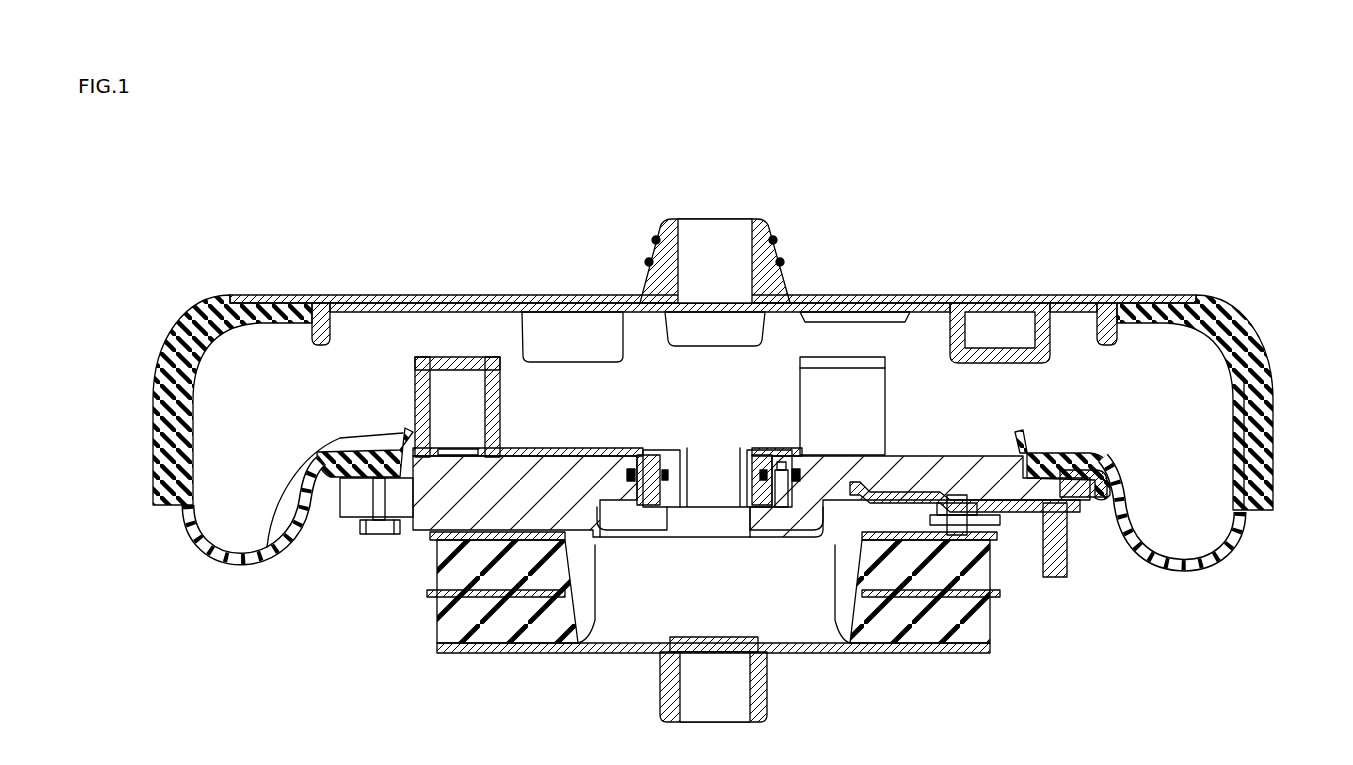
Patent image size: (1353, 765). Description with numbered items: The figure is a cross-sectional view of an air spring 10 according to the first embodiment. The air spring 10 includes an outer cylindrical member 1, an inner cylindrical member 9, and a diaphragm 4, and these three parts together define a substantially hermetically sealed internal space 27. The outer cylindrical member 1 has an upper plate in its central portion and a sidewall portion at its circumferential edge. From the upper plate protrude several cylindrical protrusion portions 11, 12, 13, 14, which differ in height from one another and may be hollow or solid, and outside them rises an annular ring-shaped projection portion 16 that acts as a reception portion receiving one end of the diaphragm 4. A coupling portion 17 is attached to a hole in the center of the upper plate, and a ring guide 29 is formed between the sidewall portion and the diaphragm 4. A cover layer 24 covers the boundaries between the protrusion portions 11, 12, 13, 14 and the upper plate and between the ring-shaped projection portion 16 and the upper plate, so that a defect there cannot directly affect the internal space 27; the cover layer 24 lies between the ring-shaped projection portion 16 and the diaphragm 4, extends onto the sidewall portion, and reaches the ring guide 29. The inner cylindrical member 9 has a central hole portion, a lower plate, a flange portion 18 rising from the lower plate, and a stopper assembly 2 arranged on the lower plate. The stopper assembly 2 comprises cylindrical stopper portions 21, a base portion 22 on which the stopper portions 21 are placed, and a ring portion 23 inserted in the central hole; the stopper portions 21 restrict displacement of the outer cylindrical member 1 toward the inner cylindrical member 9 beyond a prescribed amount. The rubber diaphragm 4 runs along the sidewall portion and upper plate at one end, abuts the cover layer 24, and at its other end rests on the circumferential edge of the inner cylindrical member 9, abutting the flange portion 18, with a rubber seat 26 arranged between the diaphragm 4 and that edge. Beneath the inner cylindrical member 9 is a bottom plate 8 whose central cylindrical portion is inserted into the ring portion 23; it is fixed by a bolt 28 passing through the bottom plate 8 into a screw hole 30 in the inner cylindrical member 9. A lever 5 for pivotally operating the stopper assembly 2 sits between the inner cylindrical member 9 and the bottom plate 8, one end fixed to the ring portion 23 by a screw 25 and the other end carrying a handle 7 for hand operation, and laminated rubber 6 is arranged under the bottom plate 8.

The outer cylindrical member 1 is at (875, 300).
The stopper assembly 2 is at (465, 250).
The diaphragm 4 is at (1189, 560).
The lever 5 is at (1020, 505).
The laminated rubber 6 is at (530, 630).
The handle 7 is at (1060, 555).
The bottom plate 8 is at (997, 520).
The inner cylindrical member 9 is at (450, 470).
The air spring 10 is at (1203, 163).
The protrusion portion 11 is at (637, 485).
The protrusion portion 12 is at (566, 296).
The protrusion portion 13 is at (698, 320).
The protrusion portion 14 is at (947, 335).
The ring-shaped projection portion 16 is at (1116, 318).
The coupling portion 17 is at (744, 222).
The flange portion 18 is at (267, 550).
The stopper portion 21 is at (413, 407).
The base portion 22 is at (443, 360).
The ring portion 23 is at (553, 457).
The cover layer 24 is at (350, 302).
The screw 25 is at (781, 508).
The rubber seat 26 is at (1105, 500).
The internal space 27 is at (1197, 391).
The bolt 28 is at (380, 538).
The ring guide 29 is at (1246, 462).
The screw hole 30 is at (373, 482).